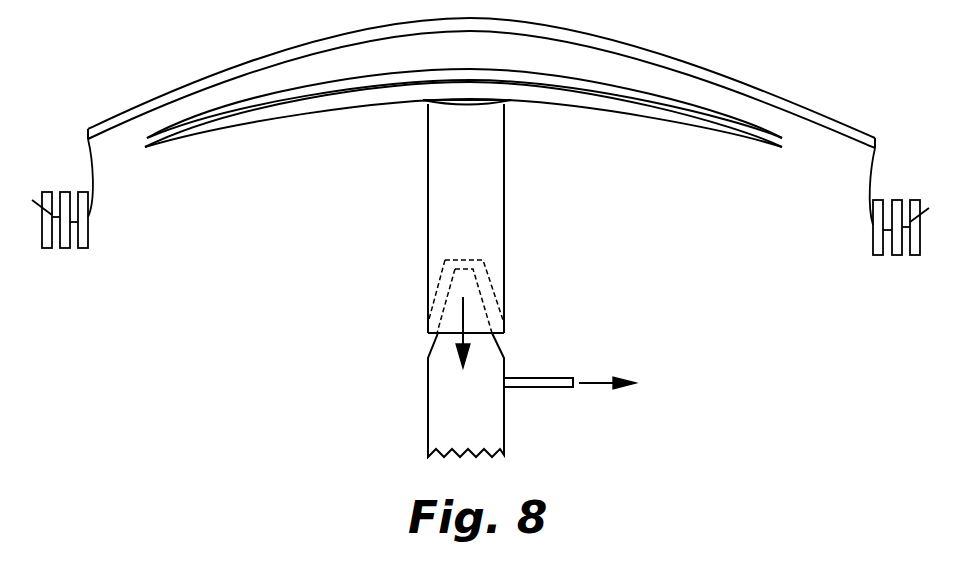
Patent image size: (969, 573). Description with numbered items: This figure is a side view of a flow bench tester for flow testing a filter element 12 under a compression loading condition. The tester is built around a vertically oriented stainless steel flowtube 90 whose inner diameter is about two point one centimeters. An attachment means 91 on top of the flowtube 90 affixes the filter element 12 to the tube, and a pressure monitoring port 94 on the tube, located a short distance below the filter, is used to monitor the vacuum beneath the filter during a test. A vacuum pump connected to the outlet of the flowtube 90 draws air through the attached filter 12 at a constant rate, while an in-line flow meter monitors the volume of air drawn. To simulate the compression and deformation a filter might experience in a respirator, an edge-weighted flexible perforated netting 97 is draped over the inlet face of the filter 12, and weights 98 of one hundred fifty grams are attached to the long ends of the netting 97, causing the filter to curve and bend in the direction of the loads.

The filter element 12 is at (673, 123).
The flowtube 90 is at (505, 208).
The attachment means 91 is at (423, 100).
The pressure monitoring port 94 is at (553, 377).
The edge-weighted flexible perforated netting 97 is at (708, 68).
The weights 98 is at (916, 200).